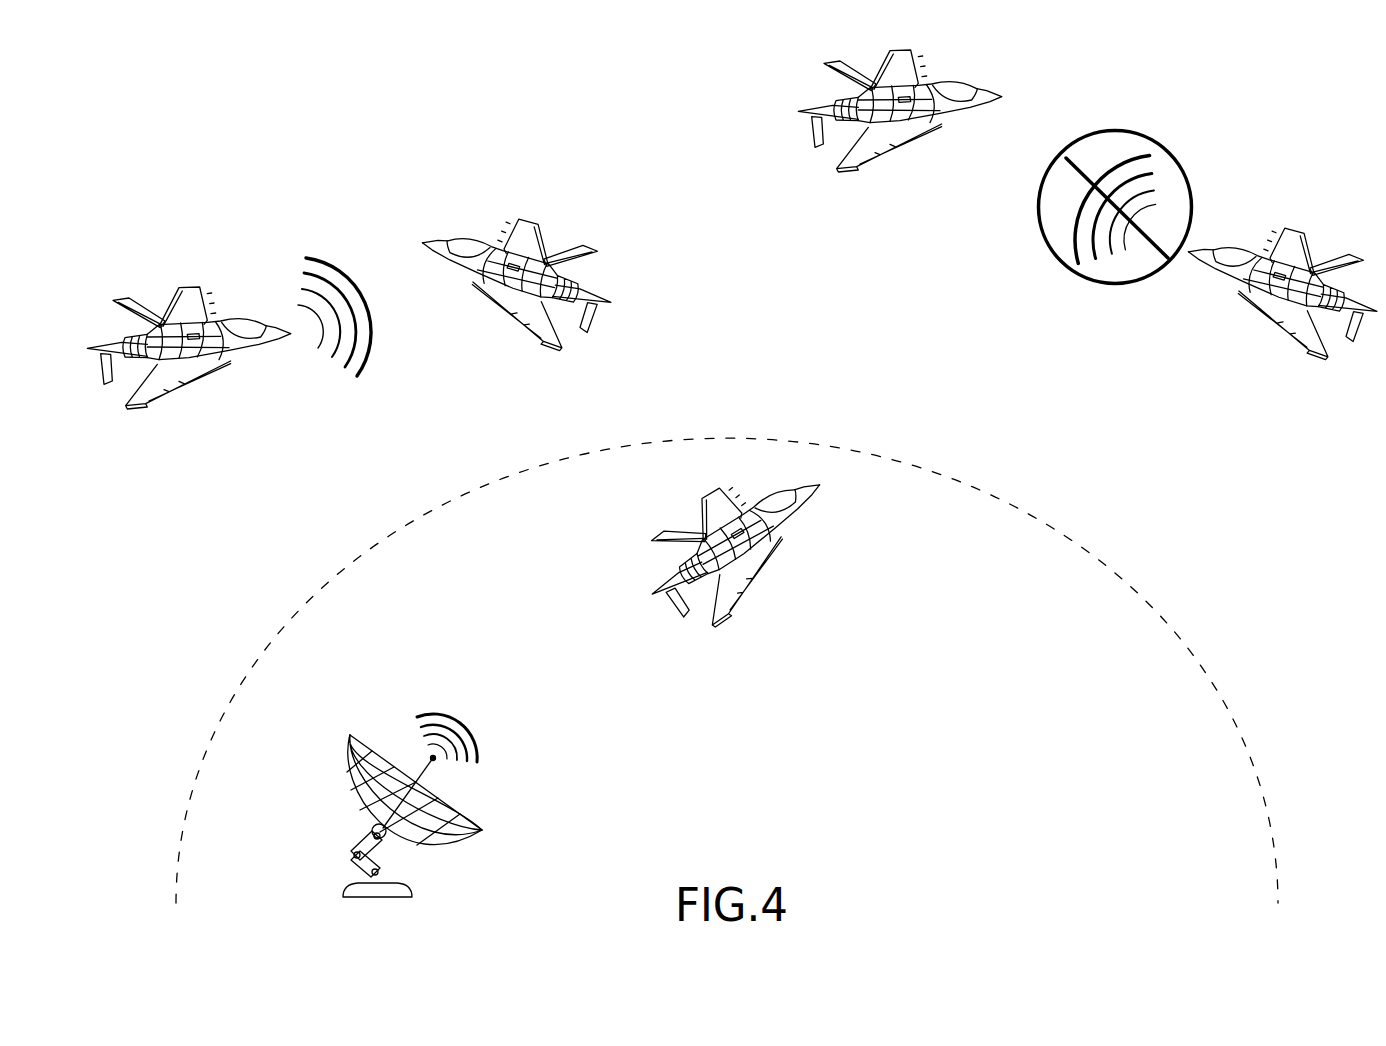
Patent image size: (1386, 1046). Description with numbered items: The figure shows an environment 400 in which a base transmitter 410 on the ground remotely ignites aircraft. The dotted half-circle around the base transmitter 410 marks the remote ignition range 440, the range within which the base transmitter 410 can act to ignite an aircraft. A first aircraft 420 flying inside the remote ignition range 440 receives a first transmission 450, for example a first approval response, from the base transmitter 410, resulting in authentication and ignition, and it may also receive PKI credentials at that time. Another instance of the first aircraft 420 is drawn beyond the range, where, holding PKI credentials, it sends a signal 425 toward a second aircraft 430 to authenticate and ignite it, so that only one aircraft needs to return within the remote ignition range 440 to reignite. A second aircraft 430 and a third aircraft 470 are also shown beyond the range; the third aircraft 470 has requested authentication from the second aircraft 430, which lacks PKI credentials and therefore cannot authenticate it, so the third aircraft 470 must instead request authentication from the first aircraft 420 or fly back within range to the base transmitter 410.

The environment 400 is at (162, 70).
The base transmitter 410 is at (350, 785).
The first aircraft 420 is at (170, 300).
The transmitted signal 425 is at (347, 275).
The second aircraft 430 is at (548, 245).
The remote ignition range 440 is at (1066, 534).
The first transmission 450 is at (457, 720).
The third aircraft 470 is at (878, 68).